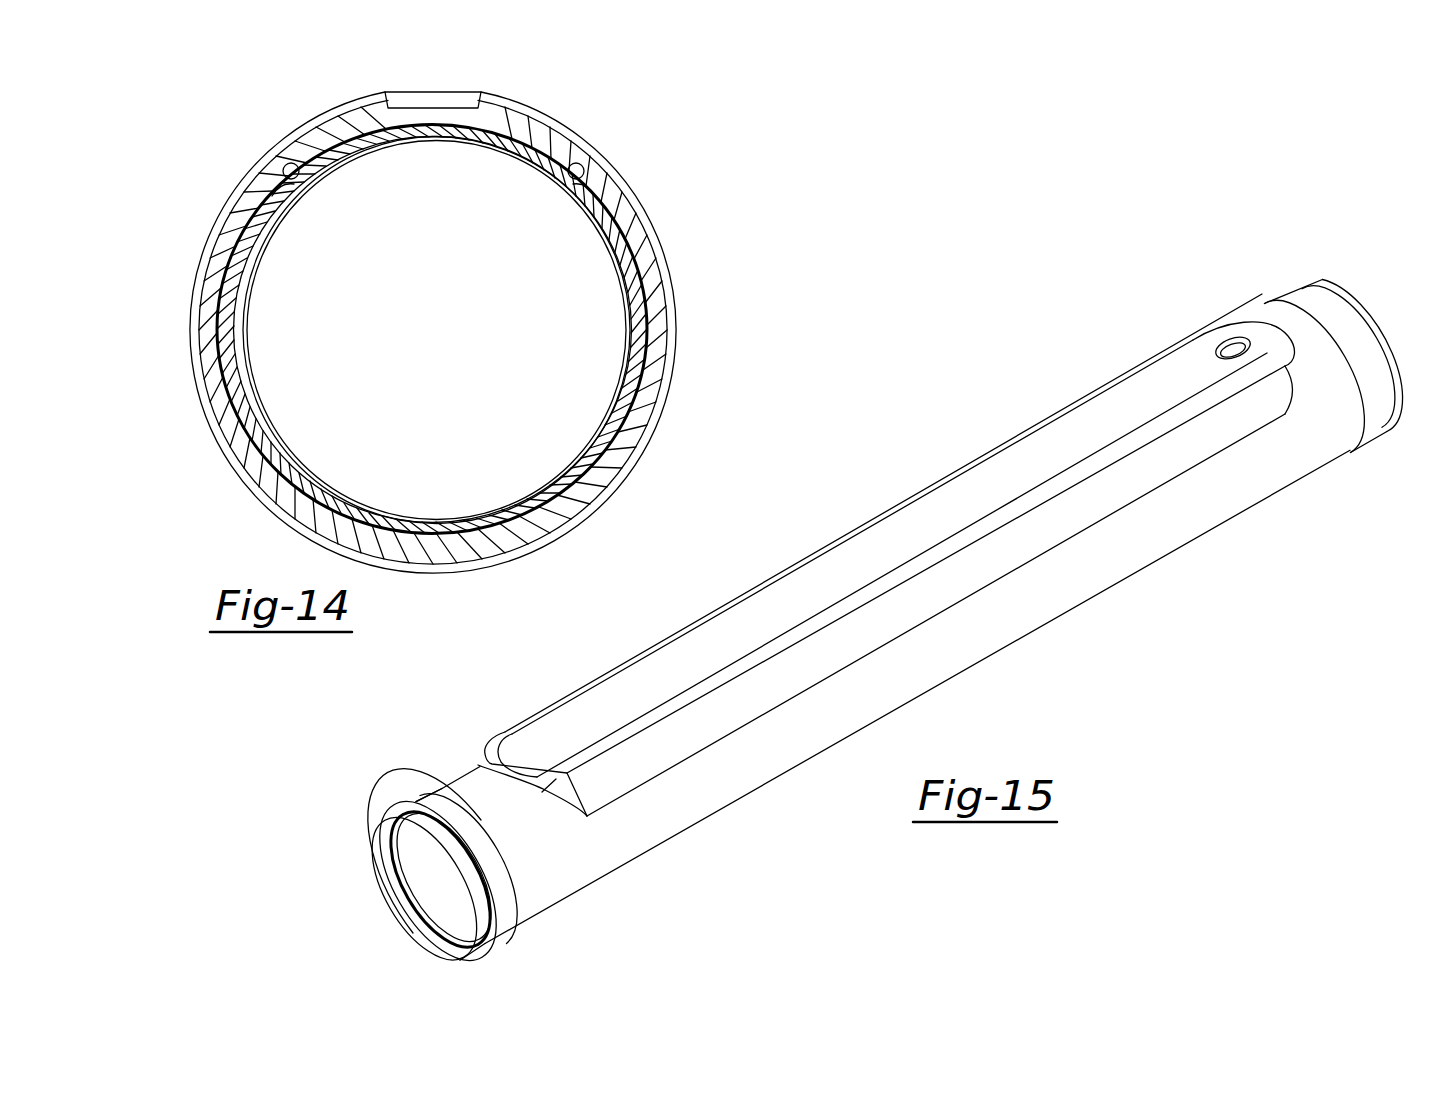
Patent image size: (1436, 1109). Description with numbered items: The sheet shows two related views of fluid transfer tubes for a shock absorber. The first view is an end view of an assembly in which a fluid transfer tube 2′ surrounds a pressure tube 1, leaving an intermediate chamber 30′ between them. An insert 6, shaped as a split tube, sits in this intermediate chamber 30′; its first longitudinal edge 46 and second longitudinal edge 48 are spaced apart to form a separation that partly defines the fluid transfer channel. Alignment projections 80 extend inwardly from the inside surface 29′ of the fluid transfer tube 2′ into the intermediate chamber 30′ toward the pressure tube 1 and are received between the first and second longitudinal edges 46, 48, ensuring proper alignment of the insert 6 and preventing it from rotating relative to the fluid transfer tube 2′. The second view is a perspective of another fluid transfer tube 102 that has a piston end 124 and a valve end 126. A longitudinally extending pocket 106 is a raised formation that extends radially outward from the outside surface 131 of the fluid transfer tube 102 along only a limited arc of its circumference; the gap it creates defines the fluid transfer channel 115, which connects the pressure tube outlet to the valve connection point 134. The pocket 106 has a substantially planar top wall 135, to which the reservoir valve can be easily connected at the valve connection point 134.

In FIG. 14, the fluid transfer tube 2′ is at (210, 213).
In FIG. 14, the inside surface 29′ is at (330, 137).
In FIG. 14, the intermediate chamber 30′ is at (470, 120).
In FIG. 14, the insert 6 is at (641, 247).
In FIG. 14, the pressure tube 1 is at (284, 436).
In FIG. 14, the alignment projections 80 is at (292, 173).
In FIG. 14, the first longitudinal edge 46 is at (280, 190).
In FIG. 14, the second longitudinal edge 48 is at (572, 188).
In FIG. 15, the fluid transfer tube 102 is at (620, 838).
In FIG. 15, the piston end 124 is at (470, 793).
In FIG. 15, the valve end 126 is at (1340, 410).
In FIG. 15, the longitudinally extending pocket 106 is at (952, 497).
In FIG. 15, the outside surface 131 is at (1020, 607).
In FIG. 15, the fluid transfer channel 115 is at (732, 643).
In FIG. 15, the top wall 135 is at (1188, 367).
In FIG. 15, the valve connection point 134 is at (1232, 346).